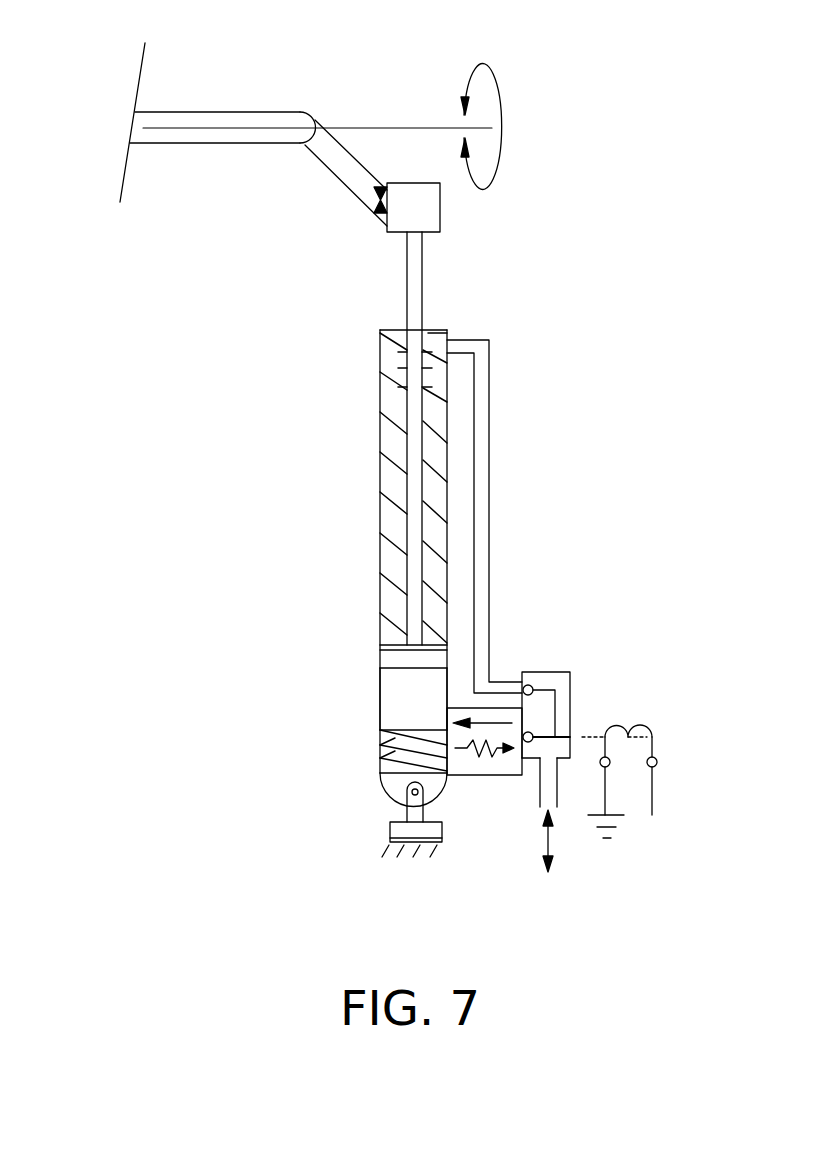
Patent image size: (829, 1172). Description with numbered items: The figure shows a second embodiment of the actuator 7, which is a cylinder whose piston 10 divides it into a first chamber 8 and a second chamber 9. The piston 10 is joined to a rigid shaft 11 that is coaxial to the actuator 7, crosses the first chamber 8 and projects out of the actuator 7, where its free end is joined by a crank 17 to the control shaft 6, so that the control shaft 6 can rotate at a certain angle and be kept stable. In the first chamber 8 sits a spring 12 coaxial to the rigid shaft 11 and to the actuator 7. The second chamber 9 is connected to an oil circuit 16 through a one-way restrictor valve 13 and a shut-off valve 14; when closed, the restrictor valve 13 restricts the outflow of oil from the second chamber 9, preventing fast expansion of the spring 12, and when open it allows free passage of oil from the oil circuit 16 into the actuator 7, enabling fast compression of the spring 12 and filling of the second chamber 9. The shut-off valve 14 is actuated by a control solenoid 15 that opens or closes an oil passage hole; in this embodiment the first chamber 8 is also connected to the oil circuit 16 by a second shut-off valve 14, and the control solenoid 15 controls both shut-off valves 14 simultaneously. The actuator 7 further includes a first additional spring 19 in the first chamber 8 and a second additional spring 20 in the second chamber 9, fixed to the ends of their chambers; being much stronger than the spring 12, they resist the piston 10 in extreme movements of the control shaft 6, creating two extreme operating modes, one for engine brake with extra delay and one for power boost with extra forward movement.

The control shaft 6 is at (210, 112).
The crank 17 is at (348, 170).
The rigid shaft 11 is at (422, 265).
The actuator 7 is at (380, 595).
The first additional spring 19 is at (403, 352).
The spring 12 is at (393, 418).
The first chamber 8 is at (388, 508).
The piston 10 is at (392, 660).
The second chamber 9 is at (393, 699).
The second additional spring 20 is at (392, 760).
The one-way restrictor valve 13 is at (482, 716).
The shut-off valve 14 is at (532, 734).
The oil circuit 16 is at (548, 797).
The control solenoid 15 is at (648, 718).